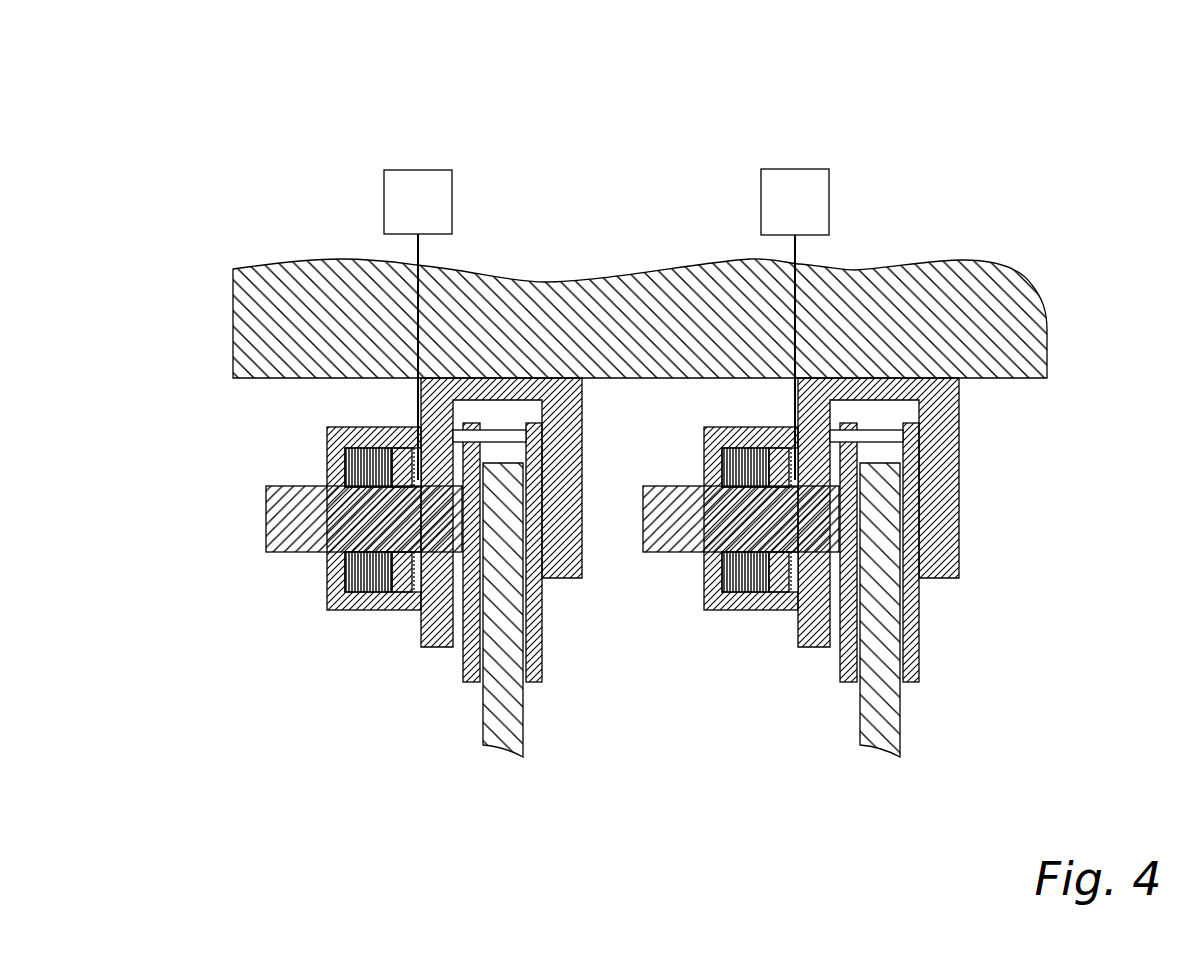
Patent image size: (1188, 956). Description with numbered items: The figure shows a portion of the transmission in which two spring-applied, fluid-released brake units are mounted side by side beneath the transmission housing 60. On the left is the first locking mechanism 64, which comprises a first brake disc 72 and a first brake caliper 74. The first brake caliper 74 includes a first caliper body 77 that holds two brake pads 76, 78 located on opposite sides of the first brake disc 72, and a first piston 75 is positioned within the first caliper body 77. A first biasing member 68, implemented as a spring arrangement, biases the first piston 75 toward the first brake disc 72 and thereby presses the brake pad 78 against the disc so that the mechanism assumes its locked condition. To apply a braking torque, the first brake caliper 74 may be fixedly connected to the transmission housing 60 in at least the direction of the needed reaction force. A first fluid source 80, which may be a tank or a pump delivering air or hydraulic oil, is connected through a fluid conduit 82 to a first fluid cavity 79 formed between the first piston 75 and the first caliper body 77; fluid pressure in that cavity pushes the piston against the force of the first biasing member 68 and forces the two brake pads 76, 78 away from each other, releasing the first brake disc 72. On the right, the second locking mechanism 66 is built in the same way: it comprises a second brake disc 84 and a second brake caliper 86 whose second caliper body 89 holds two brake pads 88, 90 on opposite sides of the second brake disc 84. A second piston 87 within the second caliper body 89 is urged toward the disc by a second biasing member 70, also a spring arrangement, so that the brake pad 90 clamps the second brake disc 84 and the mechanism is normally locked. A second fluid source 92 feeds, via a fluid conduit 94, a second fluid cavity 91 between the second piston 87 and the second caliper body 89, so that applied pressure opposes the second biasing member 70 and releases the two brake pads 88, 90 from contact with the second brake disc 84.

The transmission housing 60 is at (622, 288).
The first locking mechanism 64 is at (565, 728).
The second locking mechanism 66 is at (948, 715).
The first biasing member 68 is at (335, 573).
The second biasing member 70 is at (722, 570).
The first brake disc 72 is at (497, 715).
The first brake caliper 74 is at (312, 430).
The first piston 75 is at (288, 512).
The brake pad 76 is at (535, 658).
The first caliper body 77 is at (438, 397).
The brake pad 78 is at (468, 662).
The first fluid cavity 79 is at (345, 462).
The first fluid source 80 is at (418, 170).
The fluid conduit 82 is at (418, 248).
The second brake disc 84 is at (877, 708).
The second brake caliper 86 is at (695, 417).
The second piston 87 is at (668, 505).
The brake pad 88 is at (913, 647).
The second caliper body 89 is at (814, 397).
The brake pad 90 is at (848, 662).
The second fluid cavity 91 is at (785, 467).
The second fluid source 92 is at (795, 169).
The fluid conduit 94 is at (798, 250).